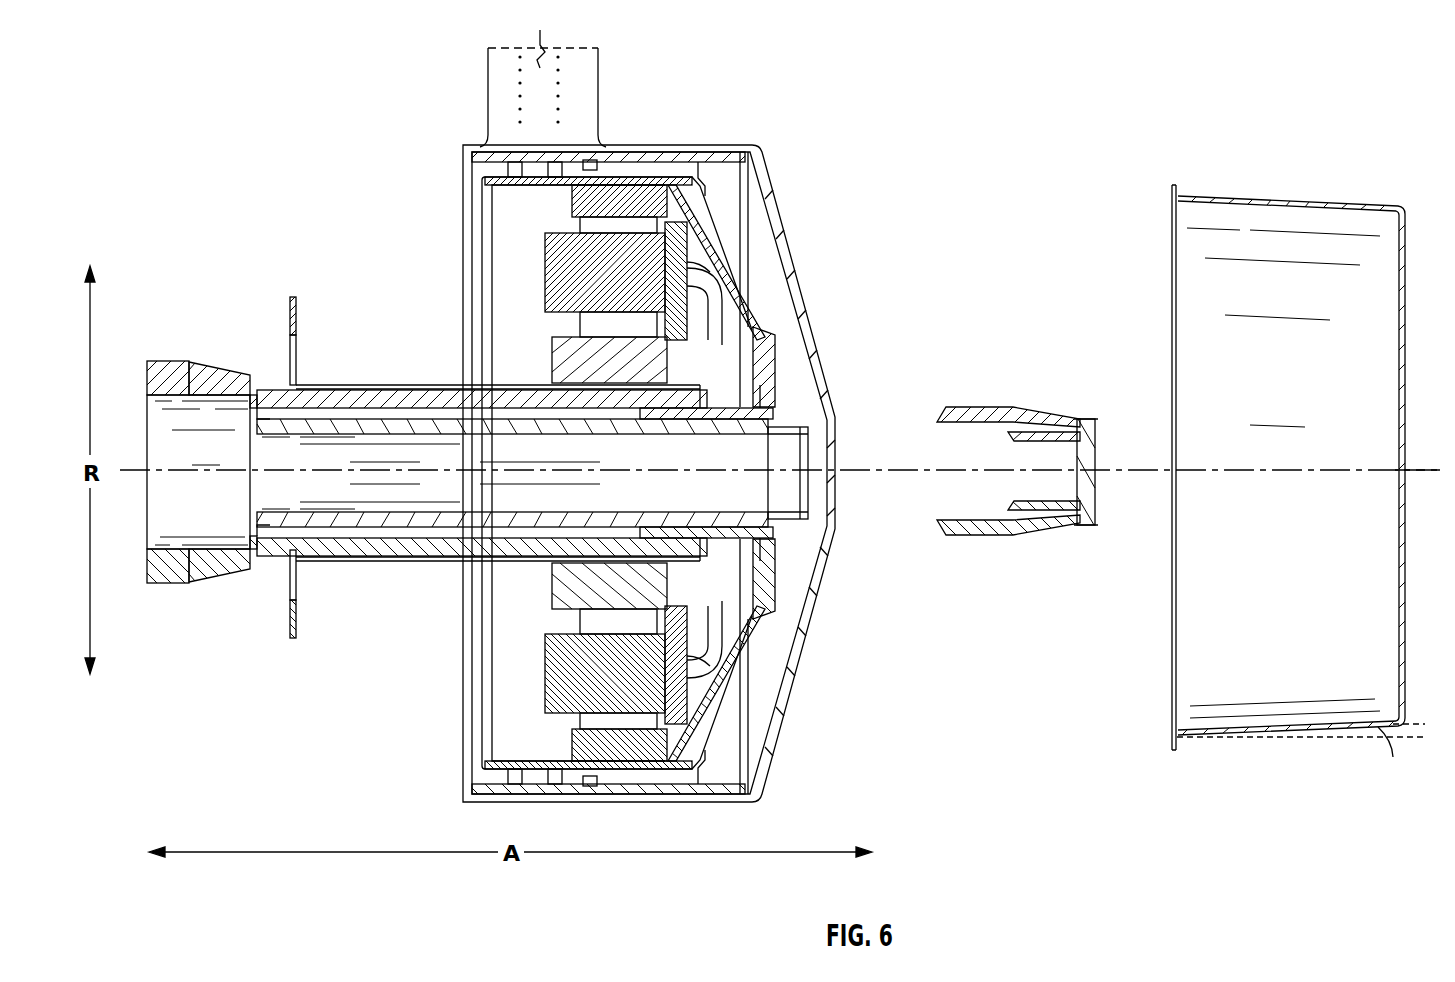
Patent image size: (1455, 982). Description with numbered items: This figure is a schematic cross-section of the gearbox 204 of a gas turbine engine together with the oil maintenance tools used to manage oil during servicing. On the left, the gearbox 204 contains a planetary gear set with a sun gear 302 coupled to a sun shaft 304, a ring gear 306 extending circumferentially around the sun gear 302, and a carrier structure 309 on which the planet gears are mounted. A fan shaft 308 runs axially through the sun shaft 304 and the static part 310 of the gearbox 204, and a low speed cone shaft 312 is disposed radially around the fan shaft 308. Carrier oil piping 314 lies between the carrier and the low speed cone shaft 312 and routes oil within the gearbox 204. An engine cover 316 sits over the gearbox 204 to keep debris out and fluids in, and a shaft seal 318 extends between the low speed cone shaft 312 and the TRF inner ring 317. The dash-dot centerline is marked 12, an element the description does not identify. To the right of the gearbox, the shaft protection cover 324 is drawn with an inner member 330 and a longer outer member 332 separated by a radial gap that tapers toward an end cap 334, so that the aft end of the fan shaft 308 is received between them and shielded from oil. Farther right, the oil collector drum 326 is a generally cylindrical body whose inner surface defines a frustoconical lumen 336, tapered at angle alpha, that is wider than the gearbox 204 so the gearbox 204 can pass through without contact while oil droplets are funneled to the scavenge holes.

The axis of rotation 12 is at (1413, 470).
The gearbox 204 is at (850, 138).
The sun gear 302 is at (560, 345).
The sun shaft 304 is at (290, 330).
The ring gear 306 is at (612, 205).
The fan shaft 308 is at (797, 508).
The carrier structure 309 is at (720, 312).
The static part 310 is at (172, 532).
The low speed cone shaft 312 is at (757, 412).
The carrier oil piping 314 is at (713, 330).
The engine cover 316 is at (800, 290).
The TRF inner ring 317 is at (665, 145).
The shaft seal 318 is at (690, 185).
The shaft protection cover 324 is at (945, 530).
The oil collector drum 326 is at (1172, 697).
The inner member 330 is at (1030, 500).
The outer member 332 is at (940, 420).
The end cap 334 is at (1085, 525).
The lumen 336 is at (1230, 372).